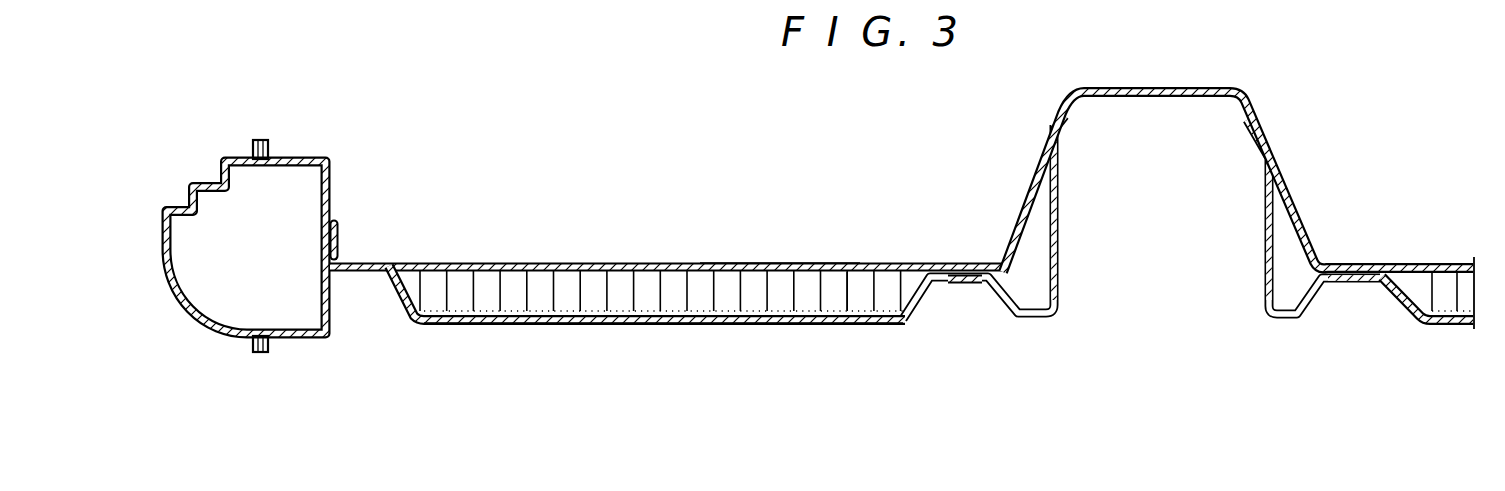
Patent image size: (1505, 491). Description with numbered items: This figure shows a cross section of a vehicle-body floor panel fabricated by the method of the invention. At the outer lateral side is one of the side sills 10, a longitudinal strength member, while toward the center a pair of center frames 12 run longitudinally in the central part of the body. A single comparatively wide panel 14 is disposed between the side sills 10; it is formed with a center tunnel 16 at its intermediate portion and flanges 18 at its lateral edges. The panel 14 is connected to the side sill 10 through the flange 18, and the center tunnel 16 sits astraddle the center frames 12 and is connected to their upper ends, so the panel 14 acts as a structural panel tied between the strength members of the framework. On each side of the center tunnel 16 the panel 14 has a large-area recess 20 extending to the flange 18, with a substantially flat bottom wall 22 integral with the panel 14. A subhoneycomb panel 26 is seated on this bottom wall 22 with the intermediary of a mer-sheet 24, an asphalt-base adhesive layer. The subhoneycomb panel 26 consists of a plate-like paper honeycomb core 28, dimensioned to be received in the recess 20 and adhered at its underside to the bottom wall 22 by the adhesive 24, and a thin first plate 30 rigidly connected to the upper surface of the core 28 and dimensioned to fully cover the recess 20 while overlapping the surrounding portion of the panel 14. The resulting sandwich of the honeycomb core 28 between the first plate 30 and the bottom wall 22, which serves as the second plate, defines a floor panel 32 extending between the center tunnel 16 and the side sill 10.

The side sill 10 is at (291, 156).
The center frame 12 is at (1045, 325).
The panel 14 is at (1024, 189).
The center tunnel 16 is at (1254, 92).
The flange 18 is at (339, 232).
The recess 20 is at (424, 305).
The bottom wall 22 is at (617, 322).
The mer-sheet 24 is at (730, 320).
The subhoneycomb panel 26 is at (616, 261).
The honeycomb core 28 is at (849, 287).
The first plate 30 is at (530, 262).
The floor panel 32 is at (770, 260).